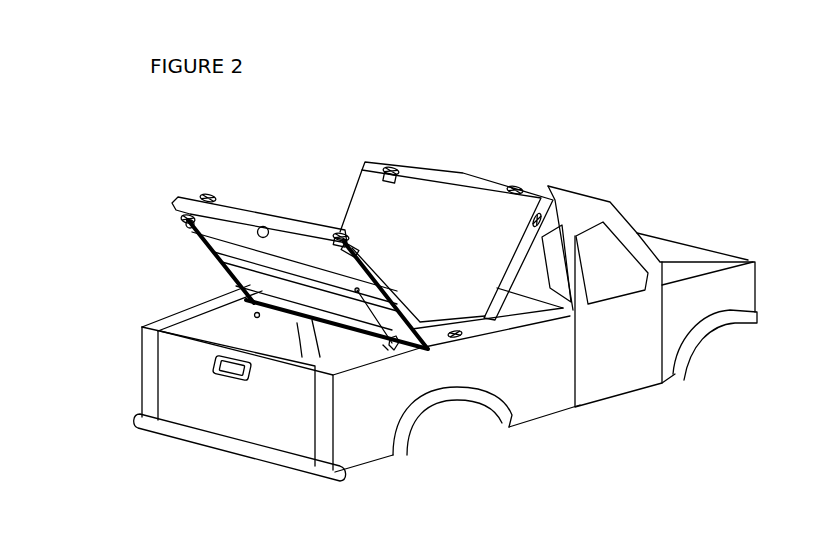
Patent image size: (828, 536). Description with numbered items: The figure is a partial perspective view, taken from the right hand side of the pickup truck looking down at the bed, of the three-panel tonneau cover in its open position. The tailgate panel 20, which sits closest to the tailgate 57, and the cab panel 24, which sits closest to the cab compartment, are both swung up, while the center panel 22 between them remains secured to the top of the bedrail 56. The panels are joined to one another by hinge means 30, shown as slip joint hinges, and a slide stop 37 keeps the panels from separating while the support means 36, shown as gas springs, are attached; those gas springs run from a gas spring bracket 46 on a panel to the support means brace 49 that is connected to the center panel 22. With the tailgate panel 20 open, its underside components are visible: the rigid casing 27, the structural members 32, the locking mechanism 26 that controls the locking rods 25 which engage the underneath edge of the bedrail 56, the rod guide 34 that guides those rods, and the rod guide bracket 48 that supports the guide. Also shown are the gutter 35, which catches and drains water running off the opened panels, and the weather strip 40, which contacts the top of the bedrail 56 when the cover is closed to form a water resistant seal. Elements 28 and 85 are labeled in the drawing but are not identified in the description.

The tailgate panel 20 is at (238, 187).
The center panel 22 is at (429, 302).
The cab panel 24 is at (357, 184).
The locking rods 25 is at (285, 238).
The locking mechanism 26 is at (263, 226).
The rigid casing 27 is at (372, 218).
The hinge 28 is at (200, 196).
The slip joint hinges 30 is at (449, 318).
The structural members 32 is at (303, 263).
The rod guide 34 is at (186, 222).
The gutter 35 is at (489, 349).
The support means 36 is at (222, 278).
The slide stop 37 is at (402, 353).
The weather strip 40 is at (227, 292).
The gas spring bracket 46 is at (357, 293).
The rod guide bracket 48 is at (183, 214).
The support means brace 49 is at (386, 348).
The bedrail 56 is at (509, 428).
The tailgate 57 is at (183, 372).
The truck cab 85 is at (577, 197).